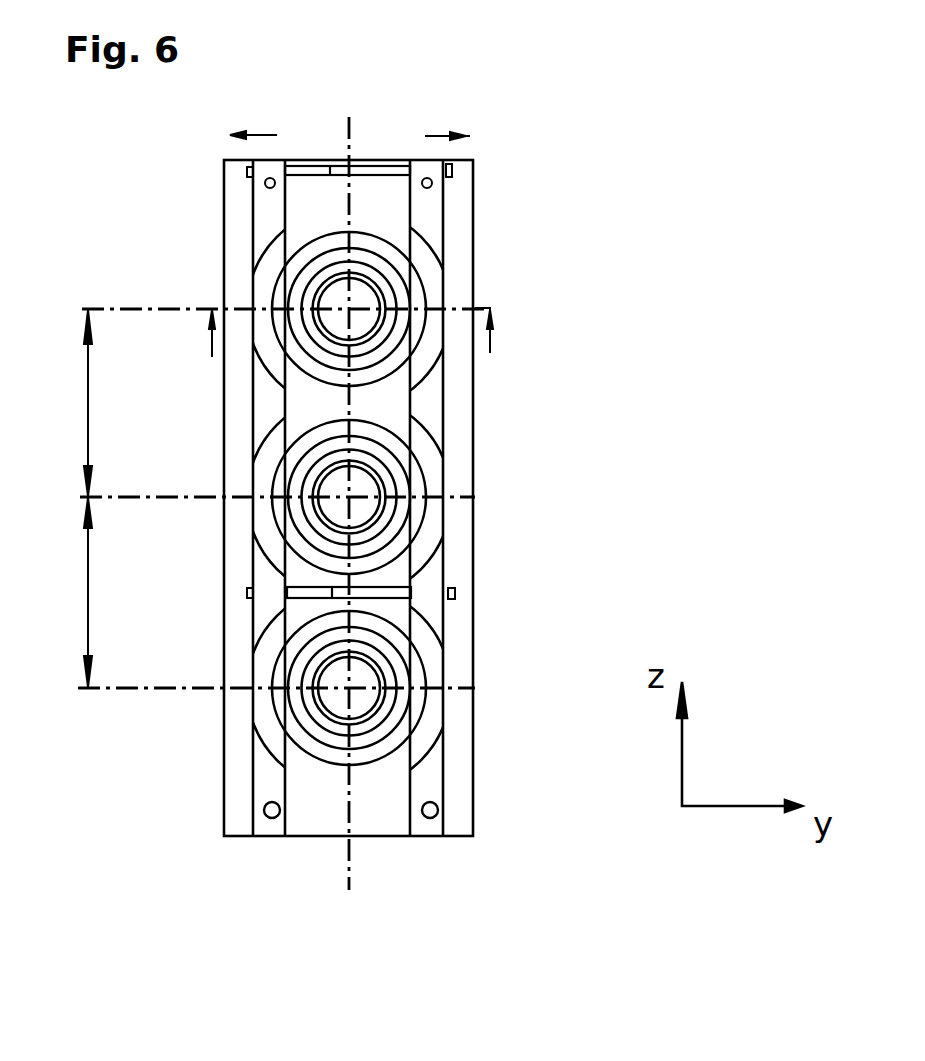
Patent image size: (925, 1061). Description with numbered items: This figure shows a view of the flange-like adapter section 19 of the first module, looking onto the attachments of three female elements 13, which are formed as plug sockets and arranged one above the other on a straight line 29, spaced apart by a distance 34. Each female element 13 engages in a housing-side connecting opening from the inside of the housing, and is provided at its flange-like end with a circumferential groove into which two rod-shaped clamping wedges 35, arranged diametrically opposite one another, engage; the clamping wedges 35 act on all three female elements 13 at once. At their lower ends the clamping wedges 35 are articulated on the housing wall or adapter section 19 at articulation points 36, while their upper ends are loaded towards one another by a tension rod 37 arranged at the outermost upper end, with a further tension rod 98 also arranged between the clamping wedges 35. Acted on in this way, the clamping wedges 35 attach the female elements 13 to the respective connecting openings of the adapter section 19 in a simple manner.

The female element 13 is at (433, 290).
The flange-like adapter section 19 is at (468, 253).
The straight line 29 is at (350, 118).
The distance 34 is at (88, 397).
The clamping wedge 35 is at (271, 600).
The articulation point 36 is at (282, 818).
The tension rod 37 is at (371, 166).
The intermediate bar 98 is at (392, 592).